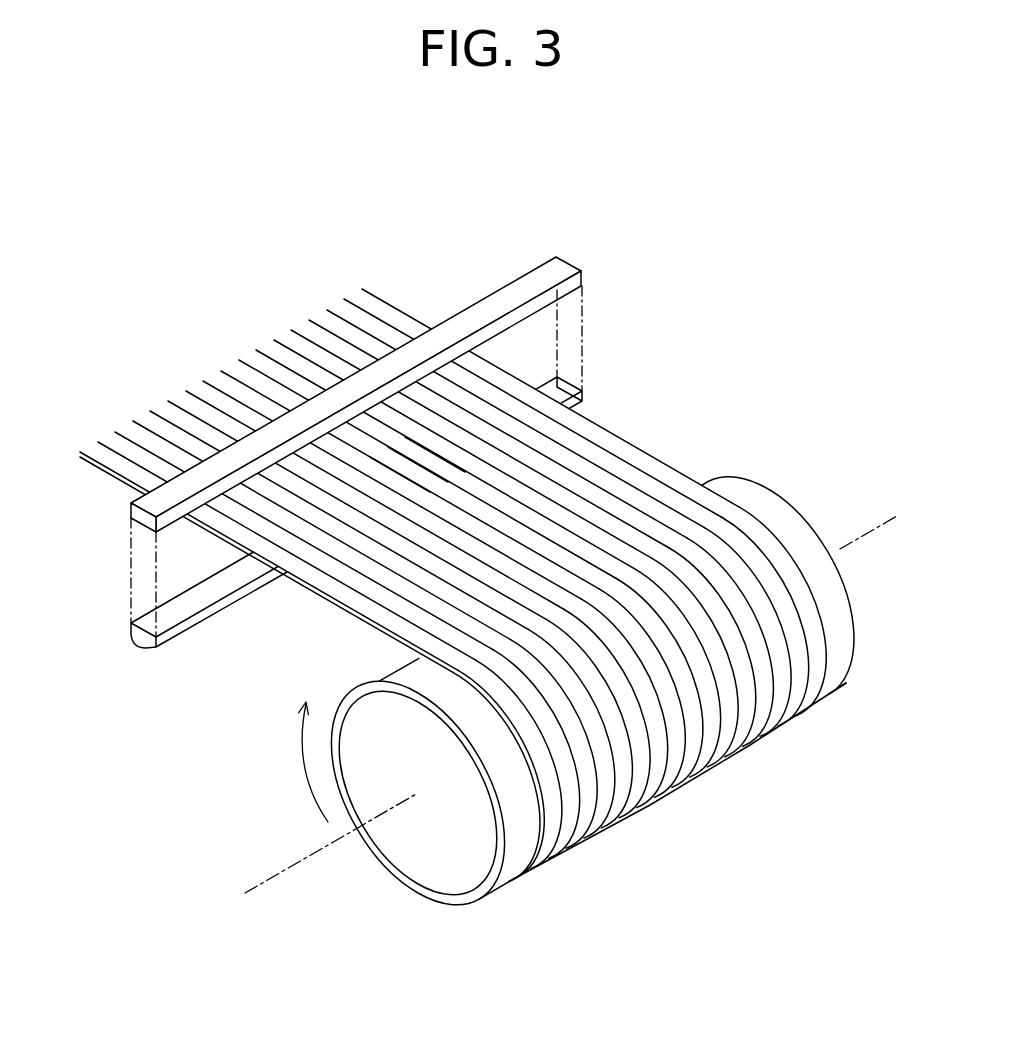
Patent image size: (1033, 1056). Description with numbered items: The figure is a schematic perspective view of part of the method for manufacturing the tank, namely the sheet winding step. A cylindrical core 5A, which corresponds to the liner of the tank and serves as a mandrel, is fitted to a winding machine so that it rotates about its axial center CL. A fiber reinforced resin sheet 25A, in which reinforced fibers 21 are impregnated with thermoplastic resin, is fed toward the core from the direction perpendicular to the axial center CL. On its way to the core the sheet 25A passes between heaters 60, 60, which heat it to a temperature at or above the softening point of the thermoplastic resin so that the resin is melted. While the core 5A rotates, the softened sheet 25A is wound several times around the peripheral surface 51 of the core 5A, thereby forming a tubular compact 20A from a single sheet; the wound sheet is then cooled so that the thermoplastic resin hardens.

The core 5A is at (780, 517).
The tubular compact 20A is at (650, 807).
The reinforced fibers 21 is at (618, 468).
The fiber reinforced resin sheet 25A is at (515, 367).
The peripheral surface 51 is at (846, 680).
The heaters 60 is at (561, 268).
The axial center CL is at (272, 878).